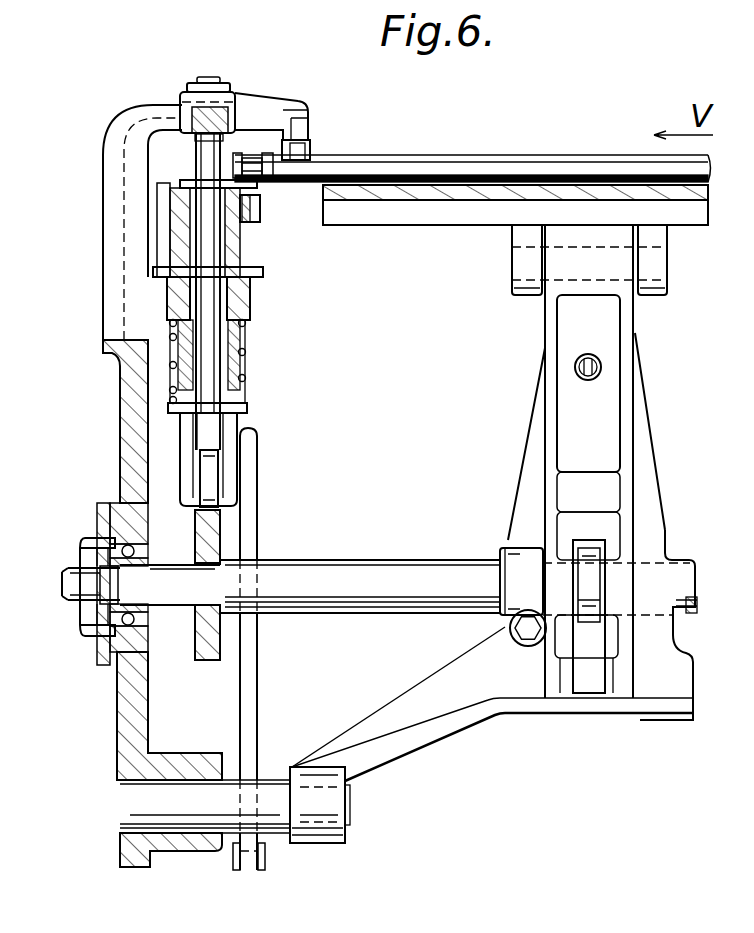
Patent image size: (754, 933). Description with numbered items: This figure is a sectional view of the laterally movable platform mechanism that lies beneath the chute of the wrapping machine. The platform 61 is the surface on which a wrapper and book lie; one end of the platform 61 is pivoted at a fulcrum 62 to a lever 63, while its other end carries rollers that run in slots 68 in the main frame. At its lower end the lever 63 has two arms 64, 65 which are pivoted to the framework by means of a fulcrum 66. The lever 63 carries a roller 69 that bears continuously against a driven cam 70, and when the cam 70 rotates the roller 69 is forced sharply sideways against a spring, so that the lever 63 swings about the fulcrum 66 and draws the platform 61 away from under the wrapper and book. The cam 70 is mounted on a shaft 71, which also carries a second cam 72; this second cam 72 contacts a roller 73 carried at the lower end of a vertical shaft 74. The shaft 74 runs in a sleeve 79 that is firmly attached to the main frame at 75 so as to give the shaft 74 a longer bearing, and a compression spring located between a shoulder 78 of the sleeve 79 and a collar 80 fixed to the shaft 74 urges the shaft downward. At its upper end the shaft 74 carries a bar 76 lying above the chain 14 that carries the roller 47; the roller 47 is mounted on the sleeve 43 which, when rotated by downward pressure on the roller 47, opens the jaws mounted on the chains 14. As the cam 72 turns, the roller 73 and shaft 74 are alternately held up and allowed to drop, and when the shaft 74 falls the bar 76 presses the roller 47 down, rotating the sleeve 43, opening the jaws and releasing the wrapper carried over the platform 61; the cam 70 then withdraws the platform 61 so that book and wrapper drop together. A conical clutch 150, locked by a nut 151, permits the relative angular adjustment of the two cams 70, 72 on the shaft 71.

The chains 14 is at (252, 158).
The sleeve 43 is at (400, 165).
The roller 47 is at (298, 150).
The platform 61 is at (512, 190).
The fulcrum 62 is at (512, 257).
The lever 63 is at (642, 425).
The arm 64 is at (425, 697).
The arm 65 is at (672, 673).
The fulcrum 66 is at (210, 822).
The slots 68 is at (250, 258).
The roller 69 is at (580, 553).
The cam 70 is at (590, 683).
The shaft 71 is at (345, 568).
The second cam 72 is at (220, 657).
The roller 73 is at (217, 473).
The shaft 74 is at (215, 340).
The main frame attachment 75 is at (165, 212).
The bar 76 is at (291, 122).
The shoulder 78 is at (245, 323).
The sleeve 79 is at (248, 290).
The collar 80 is at (243, 405).
The conical clutch 150 is at (173, 610).
The nut 151 is at (82, 603).